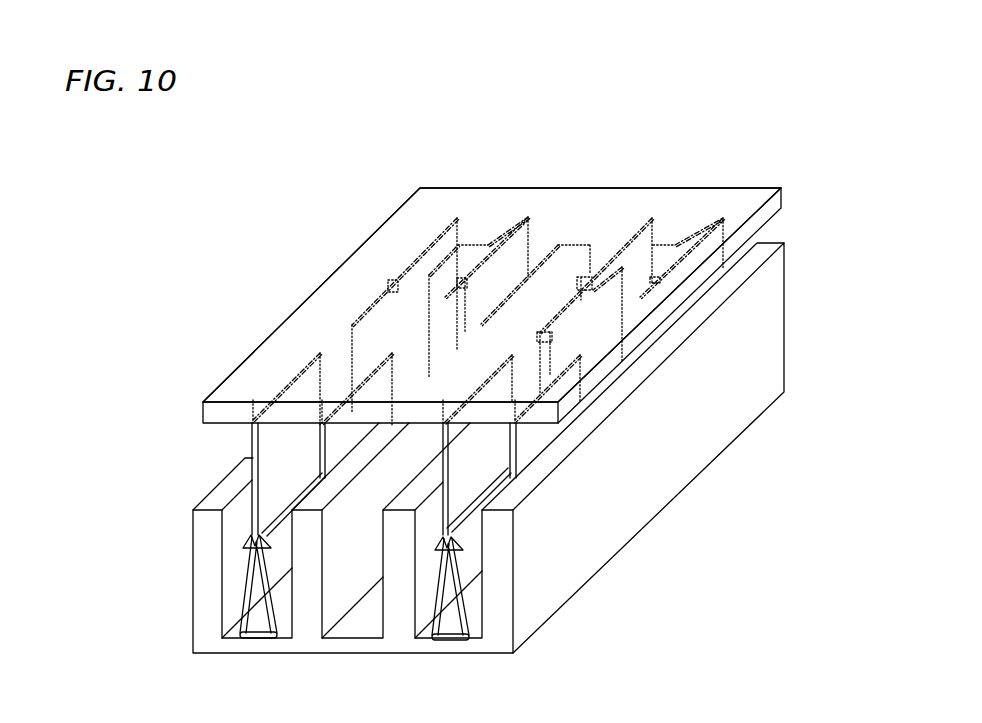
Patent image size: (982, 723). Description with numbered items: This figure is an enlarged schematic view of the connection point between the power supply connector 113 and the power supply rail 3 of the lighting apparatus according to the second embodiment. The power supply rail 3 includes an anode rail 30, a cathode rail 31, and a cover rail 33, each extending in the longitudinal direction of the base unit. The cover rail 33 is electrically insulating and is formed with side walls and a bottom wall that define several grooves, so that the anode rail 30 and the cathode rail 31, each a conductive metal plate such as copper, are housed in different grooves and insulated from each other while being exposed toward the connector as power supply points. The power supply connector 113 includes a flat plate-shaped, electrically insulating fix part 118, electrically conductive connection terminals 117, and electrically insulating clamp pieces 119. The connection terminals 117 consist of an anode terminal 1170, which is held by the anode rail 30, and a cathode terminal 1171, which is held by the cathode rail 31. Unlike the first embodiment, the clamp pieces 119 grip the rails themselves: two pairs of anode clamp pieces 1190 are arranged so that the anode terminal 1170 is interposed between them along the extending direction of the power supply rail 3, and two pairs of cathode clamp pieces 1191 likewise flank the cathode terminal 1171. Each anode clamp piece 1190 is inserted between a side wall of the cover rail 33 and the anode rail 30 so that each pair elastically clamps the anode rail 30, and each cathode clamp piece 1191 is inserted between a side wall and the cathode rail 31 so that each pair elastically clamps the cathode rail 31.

The power supply connector 113 is at (492, 277).
The fix part 118 is at (553, 208).
The connection terminals 117 is at (458, 360).
The anode terminal 1170 is at (363, 322).
The cathode terminal 1171 is at (568, 327).
The clamp pieces 119 is at (437, 254).
The anode clamp pieces 1190 is at (470, 275).
The cathode clamp pieces 1191 is at (715, 220).
The power supply rail 3 is at (431, 449).
The cover rail 33 is at (200, 567).
The cathode rail 31 is at (438, 574).
The anode rail 30 is at (262, 601).